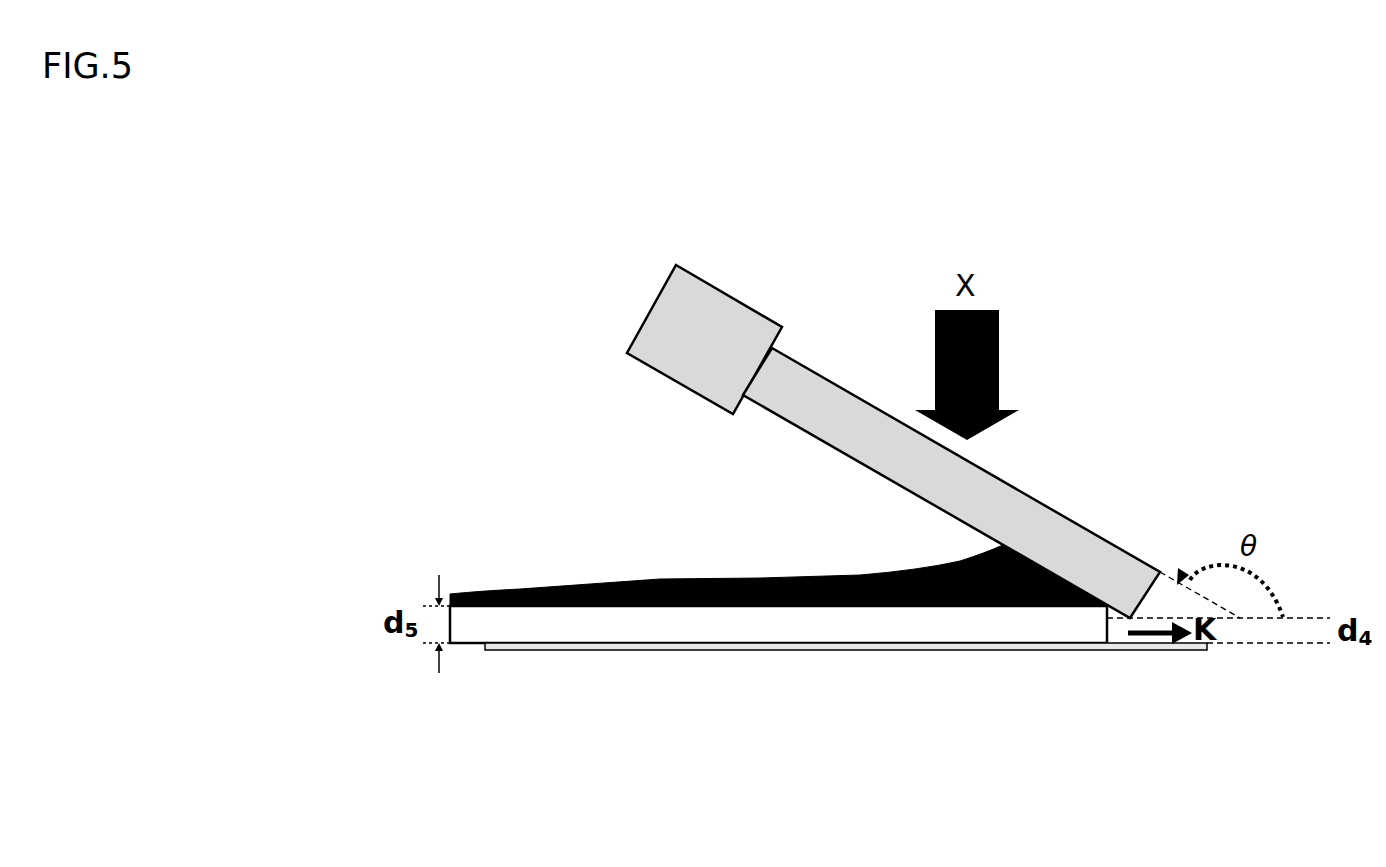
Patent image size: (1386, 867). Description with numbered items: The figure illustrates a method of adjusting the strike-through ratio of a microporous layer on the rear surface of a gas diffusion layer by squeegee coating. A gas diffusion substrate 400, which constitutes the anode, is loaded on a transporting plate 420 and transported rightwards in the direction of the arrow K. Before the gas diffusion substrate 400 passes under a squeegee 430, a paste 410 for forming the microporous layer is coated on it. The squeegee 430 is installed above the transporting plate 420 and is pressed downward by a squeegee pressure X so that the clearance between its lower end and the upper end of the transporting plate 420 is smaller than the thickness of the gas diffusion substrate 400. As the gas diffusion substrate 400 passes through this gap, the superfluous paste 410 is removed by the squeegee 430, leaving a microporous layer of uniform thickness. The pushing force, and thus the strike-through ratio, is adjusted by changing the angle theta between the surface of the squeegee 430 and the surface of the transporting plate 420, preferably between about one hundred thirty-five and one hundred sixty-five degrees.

The gas diffusion substrate 400 is at (563, 628).
The paste 410 is at (517, 590).
The transporting plate 420 is at (1170, 650).
The squeegee 430 is at (1008, 483).